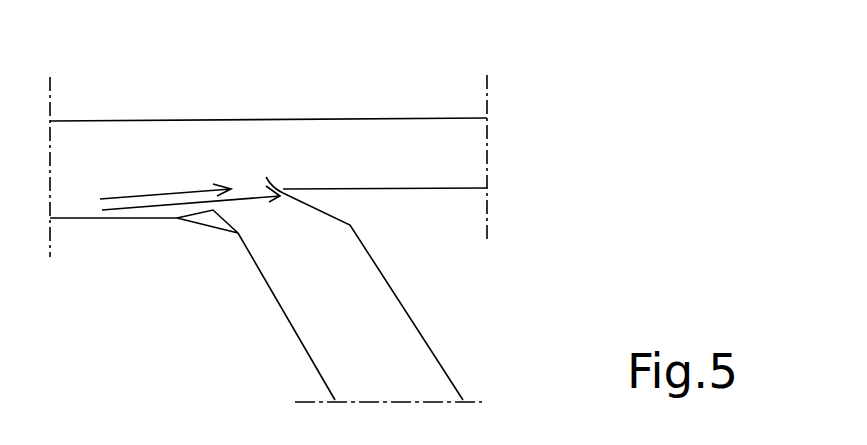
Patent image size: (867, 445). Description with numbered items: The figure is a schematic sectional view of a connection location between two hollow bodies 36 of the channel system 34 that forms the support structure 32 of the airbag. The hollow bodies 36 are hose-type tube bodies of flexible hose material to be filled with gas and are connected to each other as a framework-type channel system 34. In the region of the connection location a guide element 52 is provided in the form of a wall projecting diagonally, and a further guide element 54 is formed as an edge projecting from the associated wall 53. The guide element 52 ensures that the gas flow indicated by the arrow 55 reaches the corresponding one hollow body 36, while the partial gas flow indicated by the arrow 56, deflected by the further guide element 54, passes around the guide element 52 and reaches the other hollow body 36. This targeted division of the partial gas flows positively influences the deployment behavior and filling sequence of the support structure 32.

The support structure 32 is at (552, 95).
The channel system 34 is at (530, 138).
The hollow body 36 is at (390, 163).
The guide element 52 is at (271, 178).
The wall 53 is at (163, 220).
The further guide element 54 is at (214, 216).
The arrow indicating gas flow 55 is at (250, 200).
The arrow indicating partial gas flow 56 is at (206, 188).